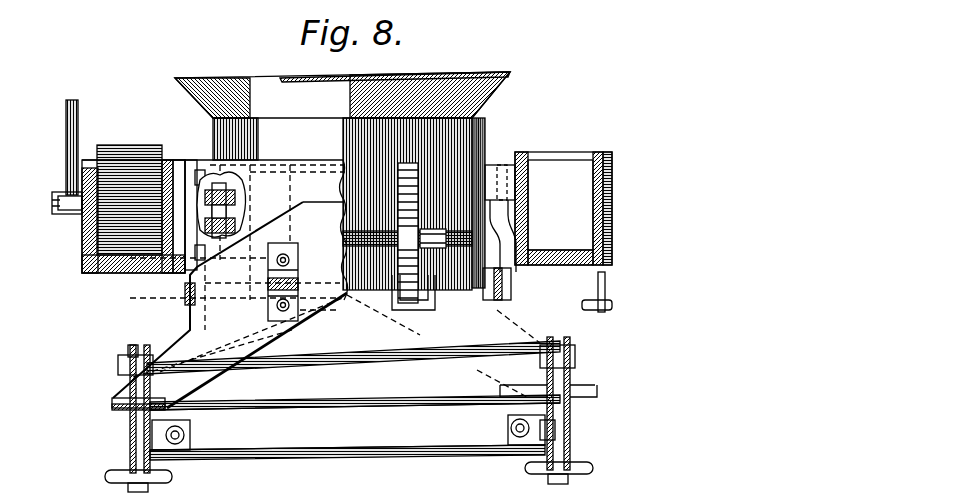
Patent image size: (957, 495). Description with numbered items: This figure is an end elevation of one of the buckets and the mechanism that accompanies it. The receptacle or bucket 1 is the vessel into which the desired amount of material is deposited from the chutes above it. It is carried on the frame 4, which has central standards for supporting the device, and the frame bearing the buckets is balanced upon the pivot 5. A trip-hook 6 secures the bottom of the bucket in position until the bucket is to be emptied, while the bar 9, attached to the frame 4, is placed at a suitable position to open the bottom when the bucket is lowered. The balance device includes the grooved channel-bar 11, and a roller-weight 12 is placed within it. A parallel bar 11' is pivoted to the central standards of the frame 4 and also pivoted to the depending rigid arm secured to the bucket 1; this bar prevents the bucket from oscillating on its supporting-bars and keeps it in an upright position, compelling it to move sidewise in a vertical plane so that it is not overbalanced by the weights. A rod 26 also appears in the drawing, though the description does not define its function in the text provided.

The receptacle or bucket 1 is at (322, 152).
The frame 4 is at (351, 414).
The pivot 5 is at (228, 210).
The trip-hook 6 is at (500, 165).
The bar 9 is at (353, 352).
The grooved channel-bar 11 is at (563, 208).
The parallel bar 11' is at (366, 291).
The roller-weight 12 is at (143, 209).
The rod 26 is at (67, 145).